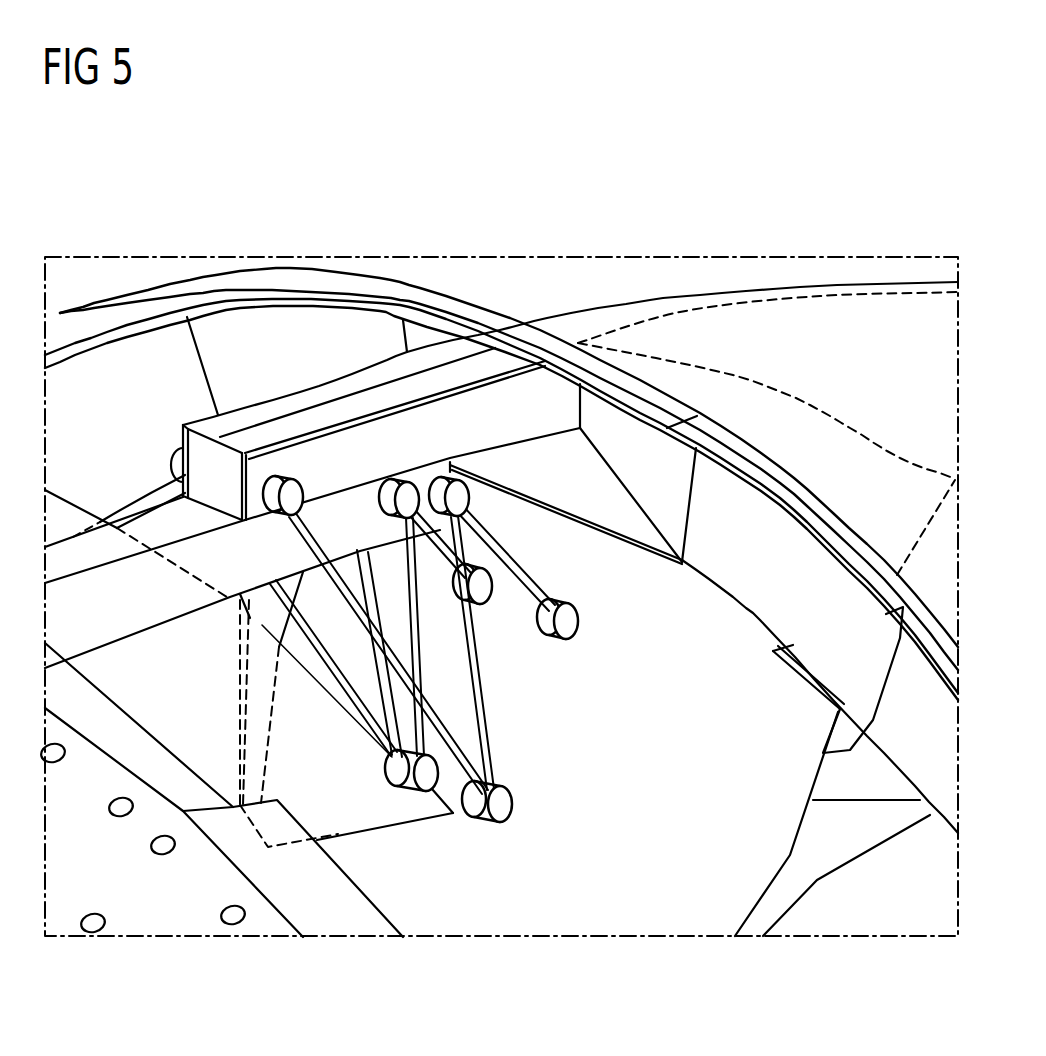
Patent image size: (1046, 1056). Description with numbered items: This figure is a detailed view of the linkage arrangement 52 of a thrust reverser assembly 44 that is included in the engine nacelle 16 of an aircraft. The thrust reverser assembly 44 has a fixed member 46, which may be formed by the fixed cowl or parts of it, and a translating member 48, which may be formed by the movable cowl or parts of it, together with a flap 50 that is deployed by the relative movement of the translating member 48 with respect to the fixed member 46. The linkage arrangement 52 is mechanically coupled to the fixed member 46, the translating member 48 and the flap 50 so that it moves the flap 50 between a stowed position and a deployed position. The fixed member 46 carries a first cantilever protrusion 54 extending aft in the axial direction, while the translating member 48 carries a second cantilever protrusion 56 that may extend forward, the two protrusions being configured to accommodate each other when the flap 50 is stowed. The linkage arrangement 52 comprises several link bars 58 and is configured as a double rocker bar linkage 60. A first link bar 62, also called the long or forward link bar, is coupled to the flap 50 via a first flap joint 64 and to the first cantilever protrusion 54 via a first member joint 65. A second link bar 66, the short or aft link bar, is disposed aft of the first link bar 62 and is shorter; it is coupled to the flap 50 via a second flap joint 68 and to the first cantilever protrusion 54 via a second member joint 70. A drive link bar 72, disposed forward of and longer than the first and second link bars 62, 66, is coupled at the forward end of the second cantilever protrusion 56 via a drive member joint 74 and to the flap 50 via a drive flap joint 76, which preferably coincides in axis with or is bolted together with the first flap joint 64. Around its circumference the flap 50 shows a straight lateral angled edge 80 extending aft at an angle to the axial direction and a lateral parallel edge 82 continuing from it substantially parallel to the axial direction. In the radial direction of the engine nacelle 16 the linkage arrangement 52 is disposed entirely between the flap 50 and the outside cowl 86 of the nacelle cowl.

The engine nacelle 16 is at (126, 172).
The thrust reverser assembly 44 is at (286, 250).
The fixed member 46 is at (150, 920).
The translating member 48 is at (412, 290).
The flap 50 is at (605, 920).
The linkage arrangement 52 is at (485, 855).
The first cantilever protrusion 54 is at (143, 615).
The second cantilever protrusion 56 is at (299, 392).
The link bars 58 is at (510, 550).
The double rocker bar linkage 60 is at (598, 712).
The first link bar 62 is at (467, 737).
The first flap joint 64 is at (456, 812).
The first member joint 65 is at (407, 500).
The second link bar 66 is at (543, 590).
The second flap joint 68 is at (566, 624).
The second member joint 70 is at (457, 498).
The drive link bar 72 is at (427, 708).
The drive member joint 74 is at (290, 500).
The drive flap joint 76 is at (500, 806).
The lateral angled edge 80 is at (775, 890).
The lateral parallel edge 82 is at (810, 805).
The outside cowl 86 is at (758, 312).